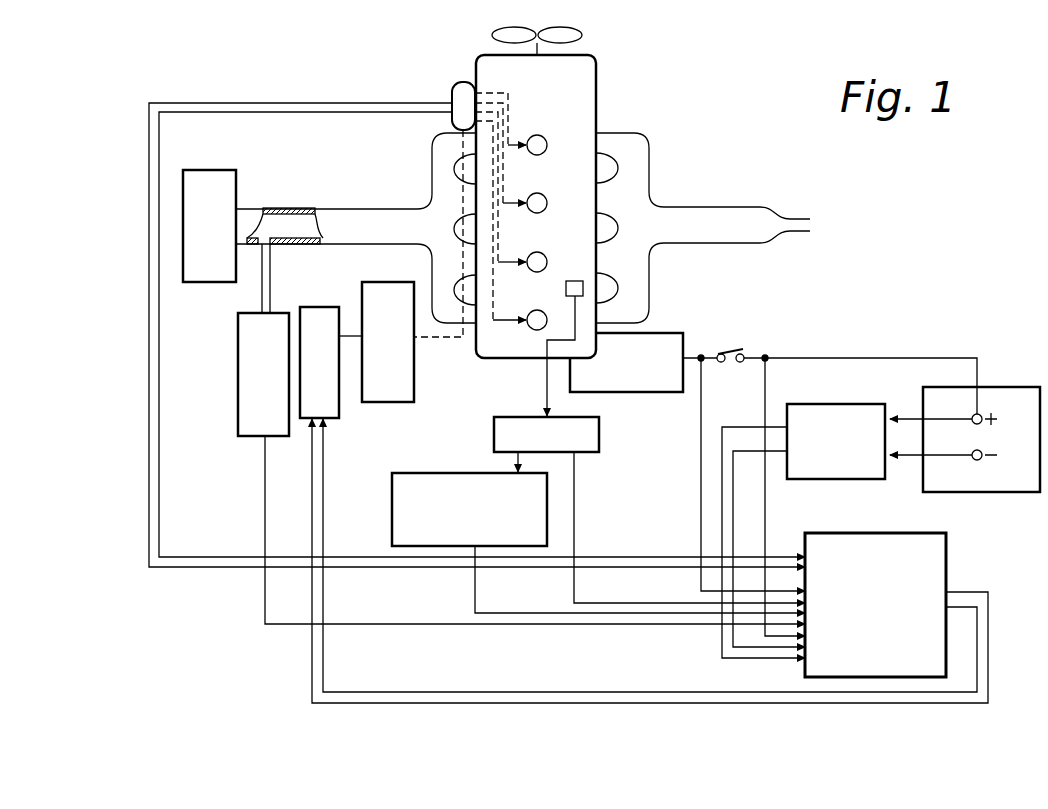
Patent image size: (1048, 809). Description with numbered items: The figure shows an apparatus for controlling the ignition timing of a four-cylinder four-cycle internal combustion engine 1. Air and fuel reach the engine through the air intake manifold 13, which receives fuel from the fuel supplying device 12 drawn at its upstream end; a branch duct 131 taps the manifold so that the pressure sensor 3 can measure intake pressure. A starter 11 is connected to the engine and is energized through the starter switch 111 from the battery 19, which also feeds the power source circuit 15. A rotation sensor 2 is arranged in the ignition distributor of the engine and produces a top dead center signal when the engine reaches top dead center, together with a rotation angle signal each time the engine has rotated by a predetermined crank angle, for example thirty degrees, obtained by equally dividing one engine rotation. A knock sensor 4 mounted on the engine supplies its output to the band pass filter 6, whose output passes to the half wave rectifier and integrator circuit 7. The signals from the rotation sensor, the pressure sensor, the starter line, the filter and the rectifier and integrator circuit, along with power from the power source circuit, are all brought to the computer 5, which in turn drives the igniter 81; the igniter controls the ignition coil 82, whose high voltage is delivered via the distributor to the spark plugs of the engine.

The internal combustion engine 1 is at (597, 80).
The rotation sensor 2 is at (453, 88).
The pressure sensor 3 is at (236, 352).
The knock sensor 4 is at (574, 281).
The computer 5 is at (947, 568).
The band pass filter 6 is at (517, 417).
The half wave rectifier and integrator circuit 7 is at (455, 473).
The starter 11 is at (678, 333).
The fuel supplying device 12 is at (240, 174).
The air intake manifold 13 is at (300, 208).
The power source circuit 15 is at (845, 404).
The battery 19 is at (1015, 387).
The igniter 81 is at (339, 414).
The ignition coil 82 is at (386, 282).
The starter switch 111 is at (737, 353).
The branch duct 131 is at (273, 280).